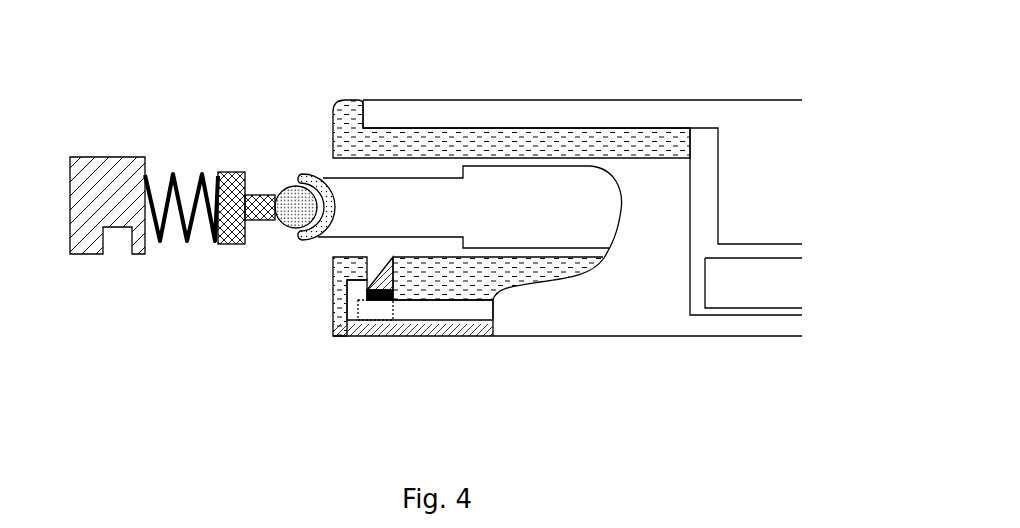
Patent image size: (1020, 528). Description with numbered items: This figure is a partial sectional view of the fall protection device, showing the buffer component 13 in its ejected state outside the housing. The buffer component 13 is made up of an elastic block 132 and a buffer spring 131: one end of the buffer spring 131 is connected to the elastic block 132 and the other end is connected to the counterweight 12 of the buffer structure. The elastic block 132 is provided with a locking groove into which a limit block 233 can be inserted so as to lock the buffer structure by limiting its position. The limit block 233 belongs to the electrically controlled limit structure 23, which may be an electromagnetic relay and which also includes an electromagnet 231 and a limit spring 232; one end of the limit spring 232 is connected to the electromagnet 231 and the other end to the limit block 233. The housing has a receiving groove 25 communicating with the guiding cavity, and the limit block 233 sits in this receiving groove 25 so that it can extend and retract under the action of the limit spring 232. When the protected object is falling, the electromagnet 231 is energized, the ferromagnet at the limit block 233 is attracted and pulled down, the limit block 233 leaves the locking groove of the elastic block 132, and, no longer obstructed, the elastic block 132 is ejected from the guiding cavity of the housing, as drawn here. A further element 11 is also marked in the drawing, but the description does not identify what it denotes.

The panel frame 11 is at (405, 205).
The counterweight 12 is at (252, 195).
The buffer component 13 is at (190, 181).
The buffer spring 131 is at (178, 185).
The elastic block 132 is at (107, 167).
The electrically controlled limit structure 23 is at (428, 347).
The electromagnet 231 is at (357, 345).
The limit spring 232 is at (385, 299).
The limit block 233 is at (392, 278).
The receiving groove 25 is at (355, 297).